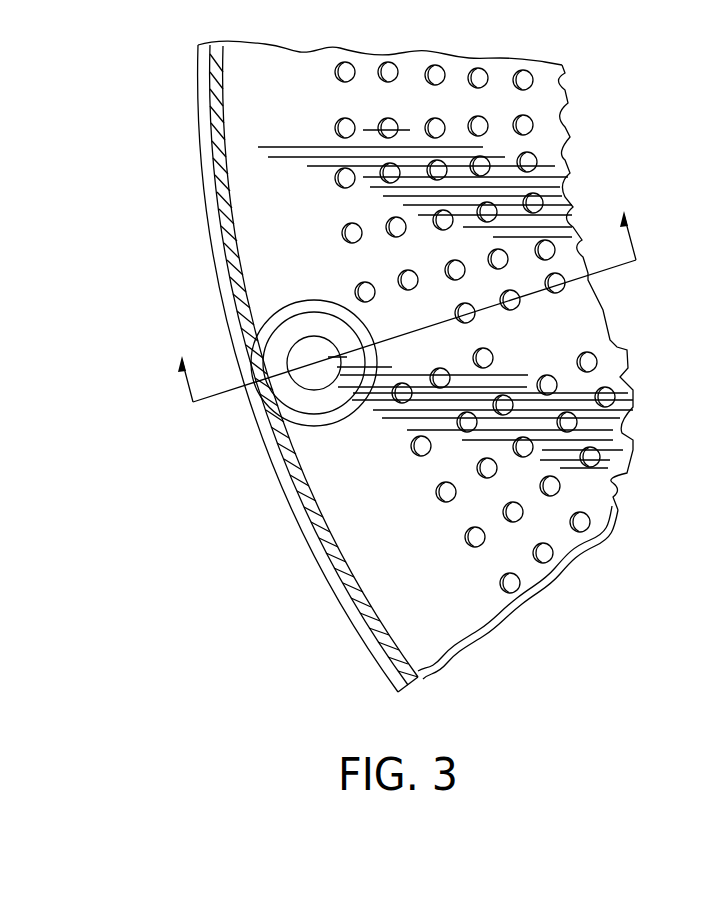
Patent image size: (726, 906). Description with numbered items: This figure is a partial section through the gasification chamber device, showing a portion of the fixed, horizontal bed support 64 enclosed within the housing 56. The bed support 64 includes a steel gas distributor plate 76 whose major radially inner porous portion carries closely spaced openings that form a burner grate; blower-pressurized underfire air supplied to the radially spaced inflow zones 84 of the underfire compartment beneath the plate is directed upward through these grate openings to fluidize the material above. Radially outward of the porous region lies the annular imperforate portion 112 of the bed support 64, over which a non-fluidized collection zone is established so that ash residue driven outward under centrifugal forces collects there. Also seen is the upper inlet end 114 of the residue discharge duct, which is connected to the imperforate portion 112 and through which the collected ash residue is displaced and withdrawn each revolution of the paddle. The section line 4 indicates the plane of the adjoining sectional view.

The section line 4- 4 is at (400, 290).
The housing 56 is at (287, 483).
The bed support 64 is at (582, 132).
The gas distributor plate 76 is at (347, 623).
The inflow zones 84 is at (598, 360).
The imperforate portion 112 is at (250, 90).
The upper inlet end 114 is at (298, 335).